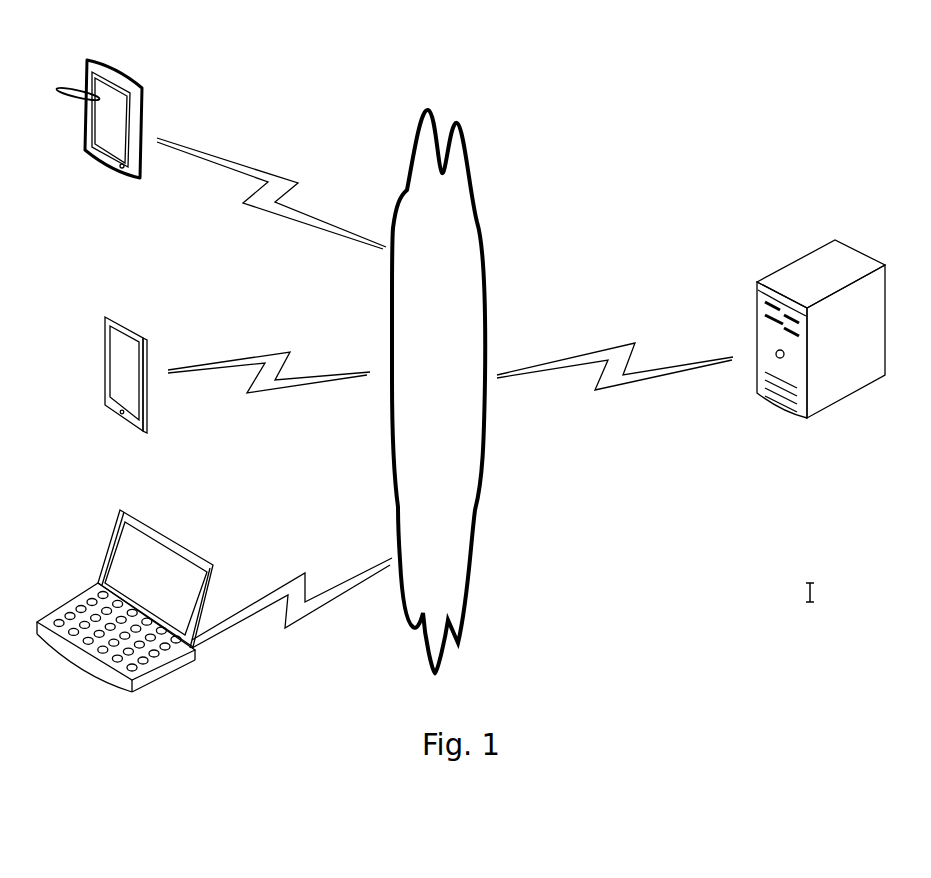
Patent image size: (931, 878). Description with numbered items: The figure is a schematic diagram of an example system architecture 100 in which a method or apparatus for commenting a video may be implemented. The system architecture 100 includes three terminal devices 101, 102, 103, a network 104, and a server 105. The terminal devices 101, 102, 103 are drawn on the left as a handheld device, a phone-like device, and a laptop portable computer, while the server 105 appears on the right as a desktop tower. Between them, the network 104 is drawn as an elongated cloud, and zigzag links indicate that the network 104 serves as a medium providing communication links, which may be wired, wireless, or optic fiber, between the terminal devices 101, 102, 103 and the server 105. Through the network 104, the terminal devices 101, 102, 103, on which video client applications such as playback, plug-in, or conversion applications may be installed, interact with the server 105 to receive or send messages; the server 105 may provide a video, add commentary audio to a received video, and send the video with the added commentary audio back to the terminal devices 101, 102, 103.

The system architecture 100 is at (812, 46).
The terminal device 101 is at (142, 107).
The terminal device 102 is at (150, 355).
The terminal device 103 is at (160, 532).
The network 104 is at (488, 280).
The server 105 is at (768, 400).